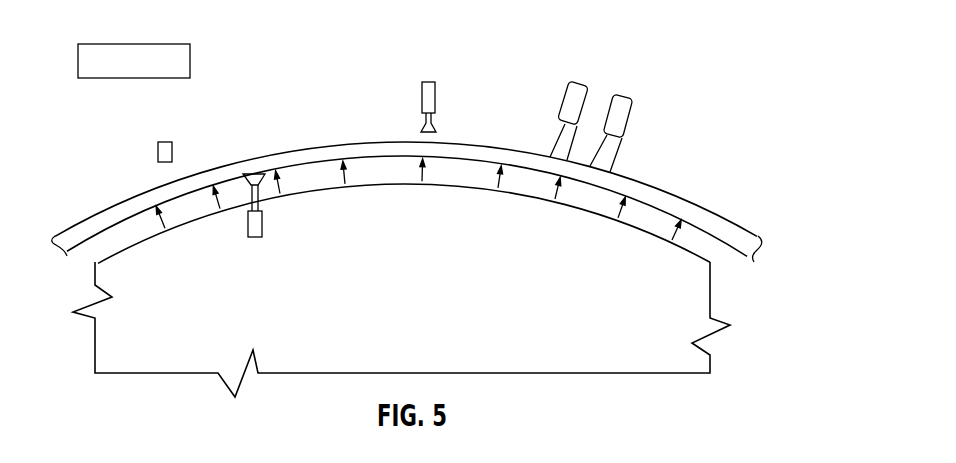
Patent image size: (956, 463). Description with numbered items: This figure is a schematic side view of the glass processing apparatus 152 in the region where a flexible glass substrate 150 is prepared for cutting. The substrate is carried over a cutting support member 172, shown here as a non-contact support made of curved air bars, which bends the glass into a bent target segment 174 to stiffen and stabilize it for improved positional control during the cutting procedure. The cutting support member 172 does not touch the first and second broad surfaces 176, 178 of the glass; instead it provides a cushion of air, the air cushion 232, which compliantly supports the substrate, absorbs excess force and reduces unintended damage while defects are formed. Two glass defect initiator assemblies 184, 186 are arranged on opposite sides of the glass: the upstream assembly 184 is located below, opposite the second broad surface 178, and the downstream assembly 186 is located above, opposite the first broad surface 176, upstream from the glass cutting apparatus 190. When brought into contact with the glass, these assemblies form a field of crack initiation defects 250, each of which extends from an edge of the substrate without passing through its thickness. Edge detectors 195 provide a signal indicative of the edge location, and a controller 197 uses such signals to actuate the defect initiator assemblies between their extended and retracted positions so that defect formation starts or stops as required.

The flexible glass substrate 150 is at (314, 153).
The glass processing apparatus 152 is at (750, 130).
The cutting support member 172 is at (588, 328).
The bent target segment 174 is at (279, 125).
The first broad surface 176 is at (660, 189).
The second broad surface 178 is at (466, 170).
The glass defect initiator assembly 184 is at (238, 220).
The glass defect initiator assembly 186 is at (452, 97).
The glass cutting apparatus 190 is at (657, 82).
The edge detectors 195 is at (157, 153).
The controller 197 is at (145, 53).
The air cushion 232 is at (372, 173).
The crack initiation defect 250 is at (695, 243).